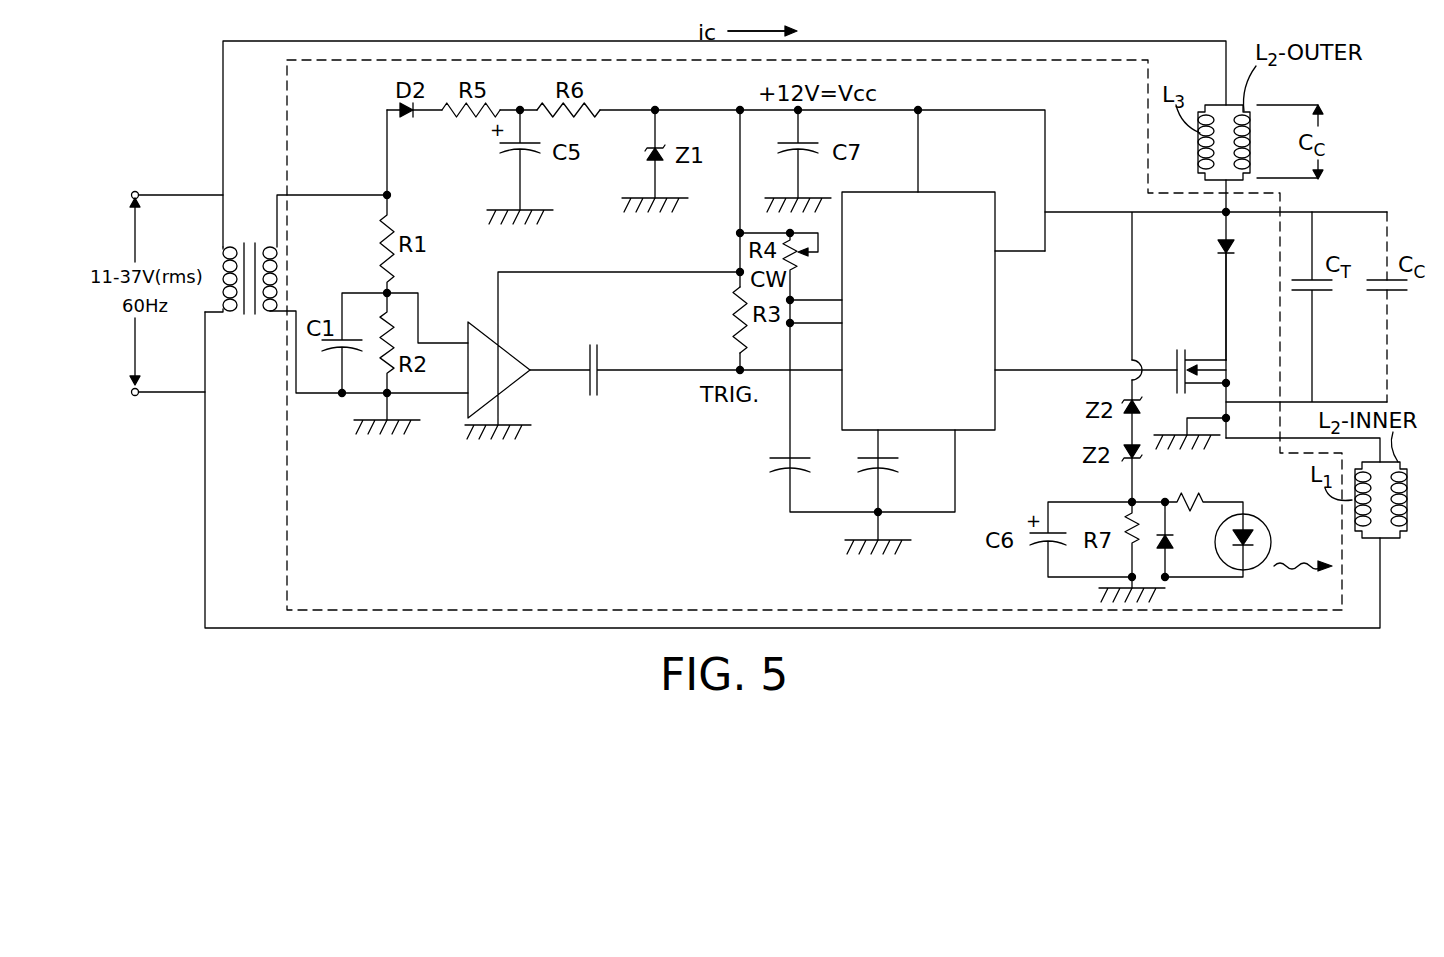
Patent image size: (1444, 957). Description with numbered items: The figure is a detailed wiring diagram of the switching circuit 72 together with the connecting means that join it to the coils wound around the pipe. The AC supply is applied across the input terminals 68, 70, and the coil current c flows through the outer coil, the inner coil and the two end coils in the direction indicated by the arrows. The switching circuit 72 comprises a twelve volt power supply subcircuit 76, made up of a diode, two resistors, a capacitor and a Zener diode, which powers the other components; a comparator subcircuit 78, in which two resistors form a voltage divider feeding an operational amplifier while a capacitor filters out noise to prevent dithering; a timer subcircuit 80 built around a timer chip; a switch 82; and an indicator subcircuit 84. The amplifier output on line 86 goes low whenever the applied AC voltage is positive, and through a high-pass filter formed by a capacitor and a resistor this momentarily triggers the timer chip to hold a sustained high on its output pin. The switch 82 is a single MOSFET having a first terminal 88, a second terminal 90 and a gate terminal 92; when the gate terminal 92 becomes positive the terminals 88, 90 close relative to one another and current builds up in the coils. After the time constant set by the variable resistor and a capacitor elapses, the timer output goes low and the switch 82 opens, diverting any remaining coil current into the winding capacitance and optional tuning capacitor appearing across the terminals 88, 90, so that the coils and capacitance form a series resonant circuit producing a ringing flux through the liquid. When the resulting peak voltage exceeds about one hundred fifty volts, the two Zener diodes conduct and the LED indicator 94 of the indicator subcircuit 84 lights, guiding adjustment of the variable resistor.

The input terminal 68 is at (138, 191).
The input terminal 70 is at (138, 396).
The switching circuit 72 is at (287, 527).
The 12 V power supply subcircuit 76 is at (247, 315).
The comparator subcircuit 78 is at (423, 444).
The timer subcircuit 80 is at (785, 523).
The switch 82 is at (1192, 320).
The indicator subcircuit 84 is at (1230, 487).
The line 86 is at (569, 374).
The first terminal 88 is at (1228, 352).
The second terminal 90 is at (1228, 388).
The gate terminal 92 is at (1168, 370).
The LED indicator 94 is at (1262, 514).
The coil current c is at (745, 31).